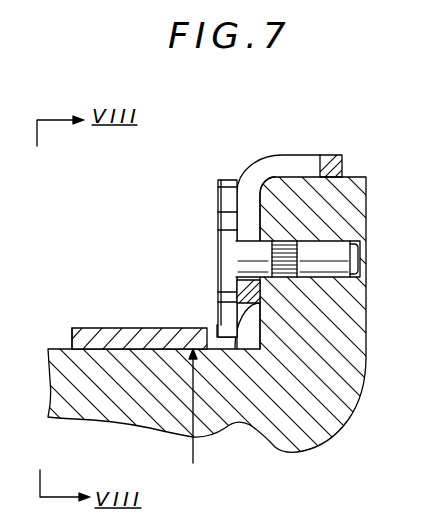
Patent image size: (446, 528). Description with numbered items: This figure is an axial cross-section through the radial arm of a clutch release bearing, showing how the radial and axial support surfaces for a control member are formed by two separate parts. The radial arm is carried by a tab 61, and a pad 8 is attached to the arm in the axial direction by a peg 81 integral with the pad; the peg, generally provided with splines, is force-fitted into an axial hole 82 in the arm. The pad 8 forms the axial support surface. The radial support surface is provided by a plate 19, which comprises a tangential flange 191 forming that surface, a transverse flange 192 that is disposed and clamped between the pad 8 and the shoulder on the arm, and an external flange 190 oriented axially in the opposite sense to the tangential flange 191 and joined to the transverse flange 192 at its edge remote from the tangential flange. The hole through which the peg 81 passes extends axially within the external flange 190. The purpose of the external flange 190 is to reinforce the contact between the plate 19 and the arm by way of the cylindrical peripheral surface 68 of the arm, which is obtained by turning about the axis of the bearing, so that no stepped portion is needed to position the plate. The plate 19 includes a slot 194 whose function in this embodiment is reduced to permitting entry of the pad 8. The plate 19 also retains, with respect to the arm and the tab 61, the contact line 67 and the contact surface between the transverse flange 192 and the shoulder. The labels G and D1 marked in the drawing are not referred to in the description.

The pad 8 is at (223, 176).
The plate 19 is at (122, 321).
The tab 61 is at (323, 422).
The contact line 67 is at (113, 351).
The cylindrical peripheral surface 68 is at (367, 180).
The peg 81 is at (317, 261).
The axial hole 82 is at (363, 268).
The external flange 190 is at (325, 155).
The tangential flange 191 is at (90, 336).
The transverse flange 192 is at (238, 288).
The slot 194 is at (209, 334).
The holder block G is at (378, 215).
The distance D1 is at (205, 408).